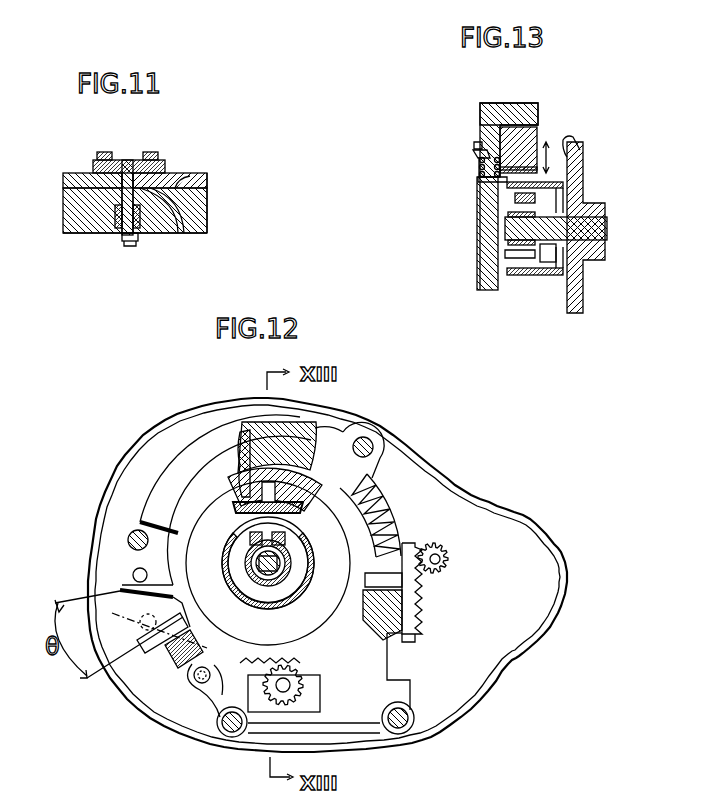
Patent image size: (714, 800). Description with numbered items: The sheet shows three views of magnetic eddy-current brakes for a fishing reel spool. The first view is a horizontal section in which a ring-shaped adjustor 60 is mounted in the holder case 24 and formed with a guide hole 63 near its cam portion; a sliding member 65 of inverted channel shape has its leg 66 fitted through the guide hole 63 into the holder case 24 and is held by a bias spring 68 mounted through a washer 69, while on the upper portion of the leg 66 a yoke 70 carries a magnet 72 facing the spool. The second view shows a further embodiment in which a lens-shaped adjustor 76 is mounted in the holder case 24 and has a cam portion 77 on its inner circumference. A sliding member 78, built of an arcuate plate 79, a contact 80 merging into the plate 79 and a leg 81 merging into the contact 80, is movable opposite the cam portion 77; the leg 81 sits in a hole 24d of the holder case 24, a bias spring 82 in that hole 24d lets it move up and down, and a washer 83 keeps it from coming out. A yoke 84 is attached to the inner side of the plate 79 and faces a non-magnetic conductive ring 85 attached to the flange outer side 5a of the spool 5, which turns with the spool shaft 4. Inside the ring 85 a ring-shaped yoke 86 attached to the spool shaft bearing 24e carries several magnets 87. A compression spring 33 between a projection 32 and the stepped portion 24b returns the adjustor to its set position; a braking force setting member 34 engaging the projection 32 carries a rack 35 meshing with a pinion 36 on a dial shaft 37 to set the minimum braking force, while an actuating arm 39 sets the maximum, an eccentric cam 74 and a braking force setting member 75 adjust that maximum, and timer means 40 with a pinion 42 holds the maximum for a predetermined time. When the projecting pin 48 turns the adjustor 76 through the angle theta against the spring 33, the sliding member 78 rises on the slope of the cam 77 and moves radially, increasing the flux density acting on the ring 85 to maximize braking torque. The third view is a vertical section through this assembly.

In FIG. 13, the spool shaft 4 is at (547, 235).
In FIG. 13, the spool 5 is at (580, 195).
In FIG. 13, the flange outer side of the spool 5a is at (565, 152).
In FIG. 11, the holder case 24 is at (80, 222).
In FIG. 13, the holder case 24 is at (483, 108).
In FIG. 12, the holder case 24 is at (173, 473).
In FIG. 11, the stepped portion of the holder case 24b is at (118, 233).
In FIG. 12, the stepped portion of the holder case 24b is at (372, 478).
In FIG. 13, the hole in the holder case 24d is at (490, 180).
In FIG. 13, the spool shaft bearing of the holder case 24e is at (507, 252).
In FIG. 12, the projection 32 is at (418, 600).
In FIG. 12, the compression spring 33 is at (387, 512).
In FIG. 12, the braking force setting member 34 is at (412, 626).
In FIG. 12, the rack 35 is at (410, 642).
In FIG. 12, the pinion 36 is at (443, 565).
In FIG. 12, the dial shaft 37 is at (441, 558).
In FIG. 12, the actuating arm 39 is at (120, 592).
In FIG. 12, the timer means 40 is at (322, 697).
In FIG. 12, the pinion 42 is at (280, 700).
In FIG. 12, the projecting pin 48 is at (128, 540).
In FIG. 11, the ring-shaped adjustor 60 is at (195, 178).
In FIG. 11, the guide hole 63 is at (207, 200).
In FIG. 11, the sliding member 65 is at (165, 165).
In FIG. 11, the leg 66 is at (162, 230).
In FIG. 11, the bias spring 68 is at (140, 226).
In FIG. 11, the washer 69 is at (128, 245).
In FIG. 11, the yoke 70 is at (127, 160).
In FIG. 11, the magnet 72 is at (102, 152).
In FIG. 12, the eccentric cam 74 is at (200, 688).
In FIG. 12, the braking force setting member 75 is at (178, 667).
In FIG. 13, the adjustor 76 is at (510, 127).
In FIG. 12, the adjustor 76 is at (190, 520).
In FIG. 13, the cam portion 77 is at (498, 103).
In FIG. 12, the cam portion 77 is at (303, 483).
In FIG. 13, the sliding member 78 is at (520, 145).
In FIG. 12, the sliding member 78 is at (232, 500).
In FIG. 12, the arcuate plate 79 is at (193, 468).
In FIG. 13, the contact 80 is at (535, 125).
In FIG. 12, the contact 80 is at (242, 492).
In FIG. 13, the leg 81 is at (478, 152).
In FIG. 13, the bias spring 82 is at (480, 165).
In FIG. 13, the washer 83 is at (476, 145).
In FIG. 13, the yoke 84 is at (516, 200).
In FIG. 12, the yoke 84 is at (296, 525).
In FIG. 13, the non-magnetic conductive ring 85 is at (545, 275).
In FIG. 12, the non-magnetic conductive ring 85 is at (308, 593).
In FIG. 13, the ring-shaped yoke 86 is at (512, 214).
In FIG. 12, the ring-shaped yoke 86 is at (262, 588).
In FIG. 13, the magnets 87 is at (598, 212).
In FIG. 12, the magnets 87 is at (310, 566).